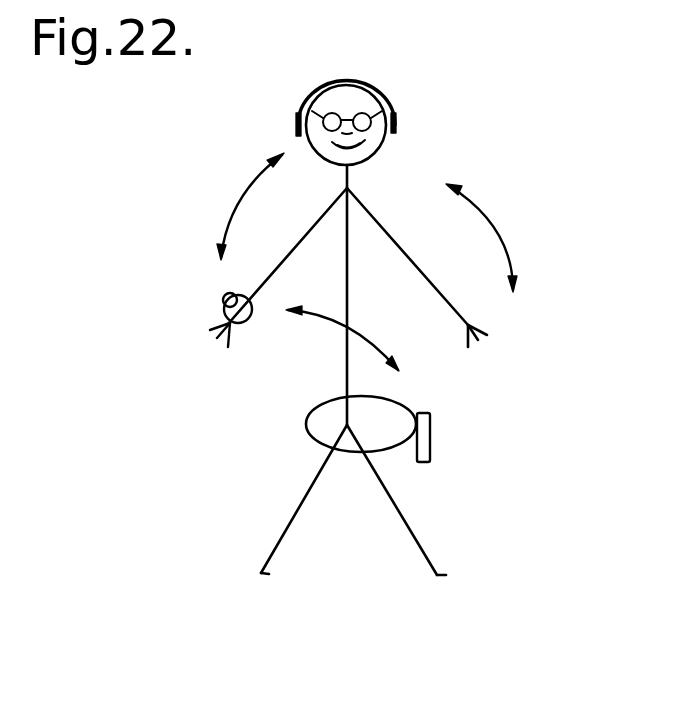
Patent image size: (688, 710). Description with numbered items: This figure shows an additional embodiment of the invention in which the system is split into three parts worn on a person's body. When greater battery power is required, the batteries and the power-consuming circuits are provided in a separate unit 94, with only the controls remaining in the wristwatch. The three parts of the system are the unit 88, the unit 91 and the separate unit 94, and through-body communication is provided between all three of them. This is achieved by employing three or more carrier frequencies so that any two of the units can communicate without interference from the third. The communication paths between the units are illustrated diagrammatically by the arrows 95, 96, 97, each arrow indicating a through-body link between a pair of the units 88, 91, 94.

The unit 91 is at (284, 120).
The arrow 97 is at (237, 200).
The arrow 95 is at (495, 232).
The unit 88 is at (200, 306).
The arrow 96 is at (331, 322).
The separate unit 94 is at (440, 430).